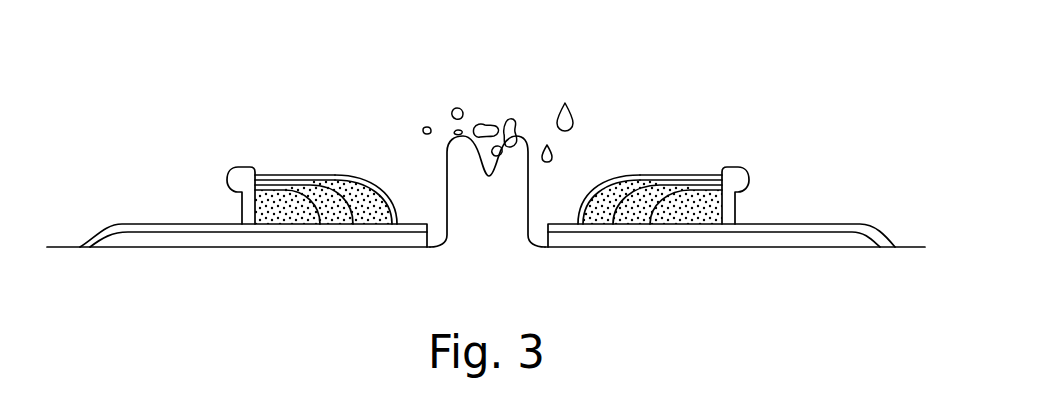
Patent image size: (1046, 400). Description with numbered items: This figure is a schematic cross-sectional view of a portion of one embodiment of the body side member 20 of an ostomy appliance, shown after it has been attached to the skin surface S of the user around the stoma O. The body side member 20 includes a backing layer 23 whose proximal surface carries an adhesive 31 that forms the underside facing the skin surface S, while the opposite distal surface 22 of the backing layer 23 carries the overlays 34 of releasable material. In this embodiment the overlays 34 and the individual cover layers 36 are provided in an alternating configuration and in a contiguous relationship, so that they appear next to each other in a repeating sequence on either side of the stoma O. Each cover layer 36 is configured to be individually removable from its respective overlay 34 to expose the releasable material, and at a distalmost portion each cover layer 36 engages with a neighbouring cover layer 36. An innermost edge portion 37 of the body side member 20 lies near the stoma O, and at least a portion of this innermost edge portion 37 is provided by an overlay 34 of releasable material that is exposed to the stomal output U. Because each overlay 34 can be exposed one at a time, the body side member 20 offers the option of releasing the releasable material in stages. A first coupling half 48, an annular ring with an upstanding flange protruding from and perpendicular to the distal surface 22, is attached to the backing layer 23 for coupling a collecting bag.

The body side member 20 is at (205, 125).
The distal surface 22 is at (826, 224).
The backing layer 23 is at (150, 228).
The adhesive 31 is at (744, 240).
The overlay 34 is at (298, 213).
The individual cover layer 36 is at (273, 193).
The innermost edge portion 37 is at (410, 208).
The first coupling half 48 is at (735, 182).
The skin surface S is at (915, 247).
The stomal output U is at (457, 100).
The stoma O is at (517, 153).